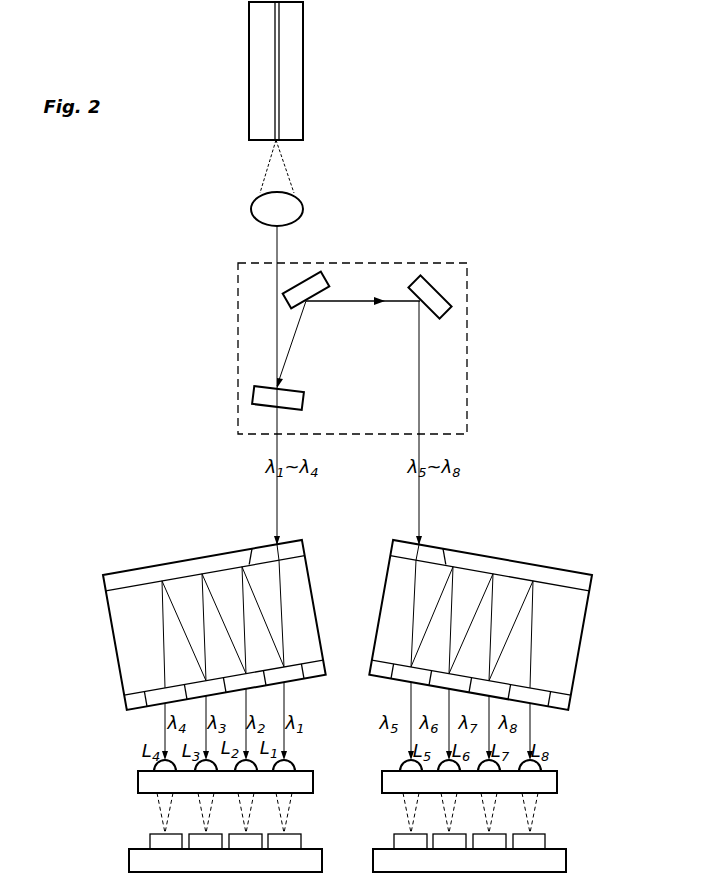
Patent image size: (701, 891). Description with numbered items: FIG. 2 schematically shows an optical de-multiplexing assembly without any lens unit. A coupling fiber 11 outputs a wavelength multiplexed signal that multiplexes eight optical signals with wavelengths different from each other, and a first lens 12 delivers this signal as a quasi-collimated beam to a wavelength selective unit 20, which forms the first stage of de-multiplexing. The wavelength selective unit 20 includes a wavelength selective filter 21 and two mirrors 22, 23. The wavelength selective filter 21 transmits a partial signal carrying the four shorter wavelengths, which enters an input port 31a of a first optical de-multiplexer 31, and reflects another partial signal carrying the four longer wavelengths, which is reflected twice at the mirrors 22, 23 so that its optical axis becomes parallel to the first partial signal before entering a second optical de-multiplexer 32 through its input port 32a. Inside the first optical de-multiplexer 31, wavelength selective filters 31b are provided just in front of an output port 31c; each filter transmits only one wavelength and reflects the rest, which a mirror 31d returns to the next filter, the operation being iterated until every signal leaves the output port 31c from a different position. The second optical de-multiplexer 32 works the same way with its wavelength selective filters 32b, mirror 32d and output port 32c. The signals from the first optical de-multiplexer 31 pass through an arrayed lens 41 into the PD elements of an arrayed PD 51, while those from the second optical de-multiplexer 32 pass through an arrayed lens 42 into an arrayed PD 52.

The coupling fiber 11 is at (279, 46).
The first lens 12 is at (298, 203).
The wavelength selective (WS) unit 20 is at (467, 402).
The wavelength selective filter (WSF) 21 is at (262, 404).
The mirror 22 is at (309, 273).
The mirror 23 is at (430, 282).
The first optical de-multiplexer (O-DeMux) 31 is at (214, 618).
The input port 31a is at (290, 548).
The wavelength selective filters (WSFs) 31b is at (297, 663).
The output port 31c is at (150, 711).
The mirror 31d is at (195, 578).
The second optical de-multiplexer (O-DeMux) 32 is at (482, 619).
The input port 32a is at (430, 550).
The wavelength selective filters (WSFs) 32b is at (400, 675).
The output port 32c is at (540, 708).
The mirror 32d is at (515, 578).
The arrayed lens 41 is at (138, 781).
The arrayed lens 42 is at (558, 780).
The arrayed PD 51 is at (130, 861).
The arrayed PD 52 is at (567, 860).